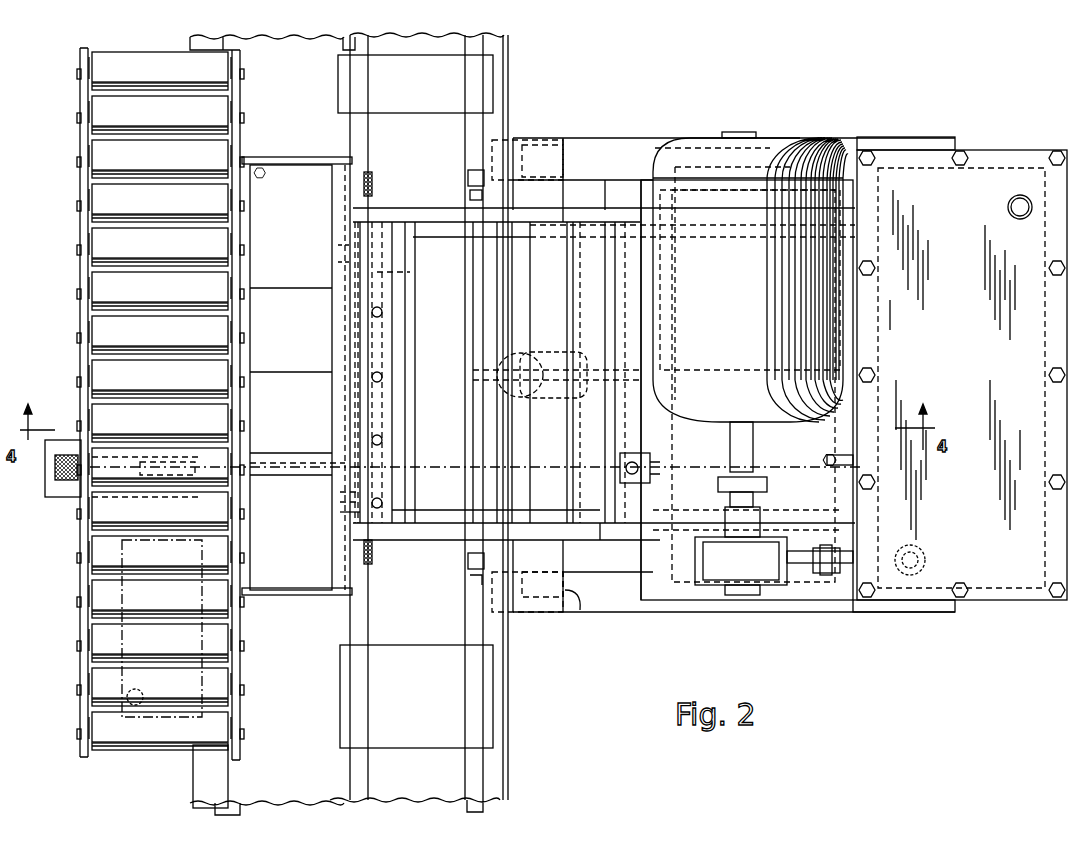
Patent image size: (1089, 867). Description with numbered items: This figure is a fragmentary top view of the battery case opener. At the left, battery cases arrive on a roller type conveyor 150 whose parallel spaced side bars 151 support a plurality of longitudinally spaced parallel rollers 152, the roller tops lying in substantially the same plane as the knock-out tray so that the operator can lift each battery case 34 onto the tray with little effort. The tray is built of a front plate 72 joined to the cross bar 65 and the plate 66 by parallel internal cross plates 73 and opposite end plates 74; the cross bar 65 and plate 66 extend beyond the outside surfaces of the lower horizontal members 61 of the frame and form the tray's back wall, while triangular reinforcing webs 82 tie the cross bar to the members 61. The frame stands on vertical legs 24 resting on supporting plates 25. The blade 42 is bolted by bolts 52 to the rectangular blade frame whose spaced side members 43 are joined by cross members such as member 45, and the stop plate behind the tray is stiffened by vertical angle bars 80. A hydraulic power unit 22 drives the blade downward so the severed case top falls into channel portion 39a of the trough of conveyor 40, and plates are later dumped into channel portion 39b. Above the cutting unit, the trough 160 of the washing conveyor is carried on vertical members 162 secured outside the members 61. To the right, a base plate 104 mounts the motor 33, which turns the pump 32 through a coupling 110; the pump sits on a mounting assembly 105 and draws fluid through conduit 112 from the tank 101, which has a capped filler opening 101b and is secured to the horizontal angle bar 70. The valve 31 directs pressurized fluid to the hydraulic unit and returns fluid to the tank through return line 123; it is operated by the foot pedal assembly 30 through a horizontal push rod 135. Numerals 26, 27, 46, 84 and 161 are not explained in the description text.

The roller type conveyor 150 is at (74, 100).
The side bars 151 is at (86, 134).
The rollers 152 is at (103, 166).
The foot pedal assembly 30 is at (48, 497).
The battery case 34 is at (128, 715).
The conveyor 40 is at (190, 776).
The channel portion 39a is at (438, 792).
The channel portion 39b is at (300, 786).
The end plates 74 is at (306, 158).
The front plate 72 is at (250, 190).
The internal cross plates 73 is at (302, 300).
The blade 42 is at (350, 262).
The angle bars 80 is at (412, 272).
The plate 66 is at (340, 500).
The cross bar 65 is at (340, 518).
The trough 160 is at (335, 80).
The lower column block 161 is at (340, 668).
The vertical members 162 is at (466, 174).
The reinforcing webs 82 is at (360, 204).
The lower horizontal member 61 is at (428, 206).
The side members 43 is at (430, 237).
The cross member 45 is at (478, 304).
The carriage guide 46 is at (410, 335).
The bolts 52 is at (382, 375).
The support column 84 is at (600, 268).
The hydraulic power unit 22 is at (545, 348).
The horizontal push rod 135 is at (460, 458).
The valve 31 is at (636, 455).
The vertical legs 24 is at (536, 145).
The supporting plates 25 is at (590, 150).
The frame bracket 26 is at (594, 612).
The lower frame beam 27 is at (600, 558).
The motor 33 is at (705, 142).
The base plate 104 is at (672, 600).
The coupling 110 is at (767, 485).
The hydraulic return line 123 is at (822, 457).
The pump 32 is at (725, 595).
The conduit 112 is at (808, 565).
The mounting assembly 105 is at (782, 588).
The horizontal angle bar 70 is at (852, 150).
The tank 101 is at (1040, 605).
The capped filler opening 101b is at (1008, 208).